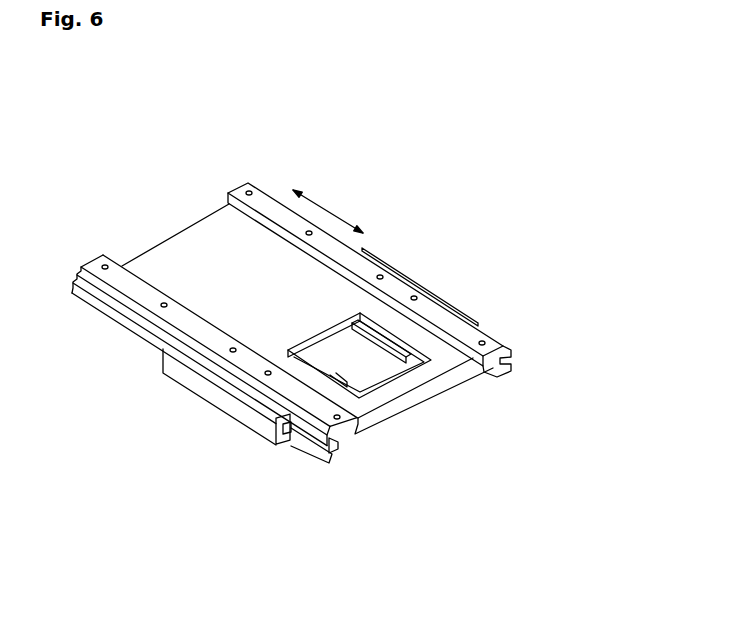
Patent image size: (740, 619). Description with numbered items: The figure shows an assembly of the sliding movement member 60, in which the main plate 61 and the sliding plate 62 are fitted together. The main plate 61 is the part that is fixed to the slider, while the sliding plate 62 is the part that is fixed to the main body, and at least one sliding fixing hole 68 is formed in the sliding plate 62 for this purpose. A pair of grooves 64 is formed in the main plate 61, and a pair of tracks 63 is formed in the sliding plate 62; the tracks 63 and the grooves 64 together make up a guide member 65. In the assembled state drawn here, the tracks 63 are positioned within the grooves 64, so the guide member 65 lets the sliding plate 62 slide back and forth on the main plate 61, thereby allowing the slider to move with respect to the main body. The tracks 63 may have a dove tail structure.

The sliding movement member 60 is at (450, 148).
The main plate 61 is at (160, 384).
The sliding plate 62 is at (276, 188).
The tracks 63 is at (335, 452).
The grooves 64 is at (293, 442).
The guide member 65 is at (397, 512).
The sliding fixing hole 68 is at (392, 265).